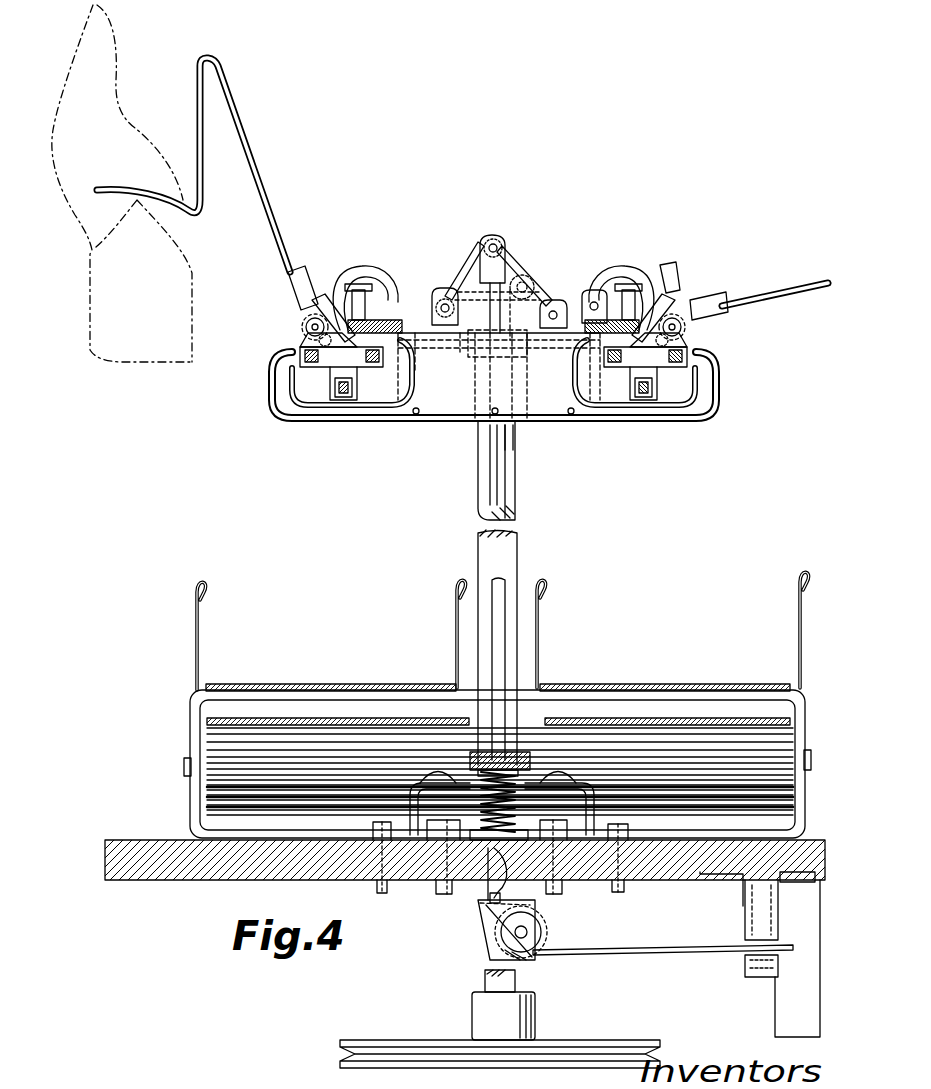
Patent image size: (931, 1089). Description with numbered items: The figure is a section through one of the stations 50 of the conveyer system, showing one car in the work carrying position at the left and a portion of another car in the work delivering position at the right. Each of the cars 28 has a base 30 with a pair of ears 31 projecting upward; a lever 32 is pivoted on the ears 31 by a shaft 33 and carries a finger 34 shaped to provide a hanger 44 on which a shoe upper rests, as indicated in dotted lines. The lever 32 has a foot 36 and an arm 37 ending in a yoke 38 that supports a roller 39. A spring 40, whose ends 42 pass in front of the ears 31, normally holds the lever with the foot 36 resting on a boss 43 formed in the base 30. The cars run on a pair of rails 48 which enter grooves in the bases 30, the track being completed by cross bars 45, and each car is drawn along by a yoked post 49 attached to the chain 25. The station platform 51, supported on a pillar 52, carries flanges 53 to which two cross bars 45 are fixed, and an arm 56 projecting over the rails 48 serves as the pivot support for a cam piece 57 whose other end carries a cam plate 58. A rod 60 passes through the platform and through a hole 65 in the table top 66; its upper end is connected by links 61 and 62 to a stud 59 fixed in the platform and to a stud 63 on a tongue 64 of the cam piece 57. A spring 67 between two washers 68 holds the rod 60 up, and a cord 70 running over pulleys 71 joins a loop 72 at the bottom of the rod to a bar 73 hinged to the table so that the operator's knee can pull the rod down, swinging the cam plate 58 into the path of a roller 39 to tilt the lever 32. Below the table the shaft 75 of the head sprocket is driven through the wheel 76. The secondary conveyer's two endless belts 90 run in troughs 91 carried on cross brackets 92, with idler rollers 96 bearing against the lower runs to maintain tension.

The chain 25 is at (344, 398).
The cars 28 is at (493, 354).
The base 30 is at (333, 368).
The ears 31 is at (305, 343).
The lever 32 is at (320, 295).
The shaft 33 is at (305, 328).
The finger 34 is at (272, 213).
The foot 36 is at (343, 265).
The arm 37 is at (345, 280).
The yoke 38 is at (358, 290).
The roller 39 is at (372, 288).
The spring 40 is at (298, 305).
The ends 42 is at (322, 342).
The boss 43 is at (499, 365).
The hanger 44 is at (160, 198).
The cross bars 45 is at (385, 418).
The rails 48 is at (310, 362).
The yoked post 49 is at (333, 400).
The station 50 is at (506, 236).
The platform 51 is at (462, 340).
The pillar 52 is at (480, 496).
The flanges 53 is at (515, 376).
The arm 56 is at (440, 302).
The cam piece 57 is at (385, 320).
The cam plate 58 is at (372, 285).
The stud 59 is at (528, 283).
The rod 60 is at (512, 445).
The link 61 is at (505, 285).
The link 62 is at (468, 285).
The stud 63 is at (438, 288).
The tongue 64 is at (568, 300).
The hole 65 is at (485, 858).
The table top 66 is at (670, 872).
The spring 67 is at (488, 782).
The washers 68 is at (520, 770).
The cord 70 is at (633, 955).
The pulleys 71 is at (535, 935).
The loop 72 is at (492, 872).
The bar 73 is at (790, 905).
The shaft 75 is at (484, 984).
The wheel 76 is at (425, 1070).
The endless belts 90 is at (328, 690).
The troughs 91 is at (455, 612).
The cross brackets 92 is at (803, 692).
The idler rollers 96 is at (500, 771).